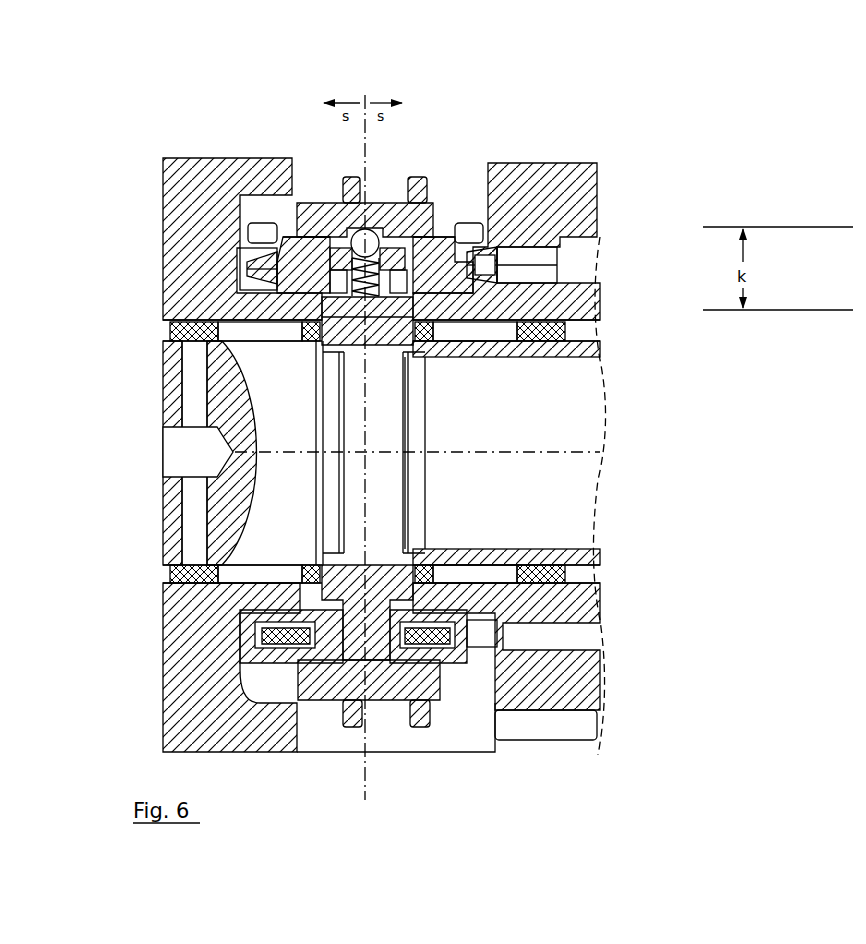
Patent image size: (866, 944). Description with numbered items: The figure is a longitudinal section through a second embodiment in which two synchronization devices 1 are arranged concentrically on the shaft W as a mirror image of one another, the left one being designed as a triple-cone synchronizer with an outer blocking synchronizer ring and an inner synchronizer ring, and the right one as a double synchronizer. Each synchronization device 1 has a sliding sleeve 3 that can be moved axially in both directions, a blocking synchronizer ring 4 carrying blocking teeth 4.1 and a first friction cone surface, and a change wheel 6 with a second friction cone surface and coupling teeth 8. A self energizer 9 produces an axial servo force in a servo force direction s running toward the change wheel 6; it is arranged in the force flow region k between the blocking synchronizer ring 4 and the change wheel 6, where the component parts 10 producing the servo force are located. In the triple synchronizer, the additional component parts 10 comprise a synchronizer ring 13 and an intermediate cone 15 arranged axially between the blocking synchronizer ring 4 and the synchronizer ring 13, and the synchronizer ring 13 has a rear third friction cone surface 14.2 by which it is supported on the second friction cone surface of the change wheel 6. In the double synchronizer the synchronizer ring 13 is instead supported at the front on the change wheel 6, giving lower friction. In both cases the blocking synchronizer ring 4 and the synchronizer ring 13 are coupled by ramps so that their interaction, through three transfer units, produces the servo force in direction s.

The synchronization device 1 is at (192, 133).
The sliding sleeve 3 is at (408, 180).
The blocking synchronizer ring 4 is at (318, 263).
The blocking teeth 4.1 is at (293, 232).
The change wheel 6 is at (163, 158).
The coupling teeth 8 is at (263, 224).
The self energizer 9 is at (378, 238).
The component part 10 is at (497, 243).
The synchronizer ring 13 is at (270, 278).
The rear third friction cone surface 14.2 is at (300, 305).
The intermediate cone 15 is at (277, 270).
The shaft W is at (590, 368).